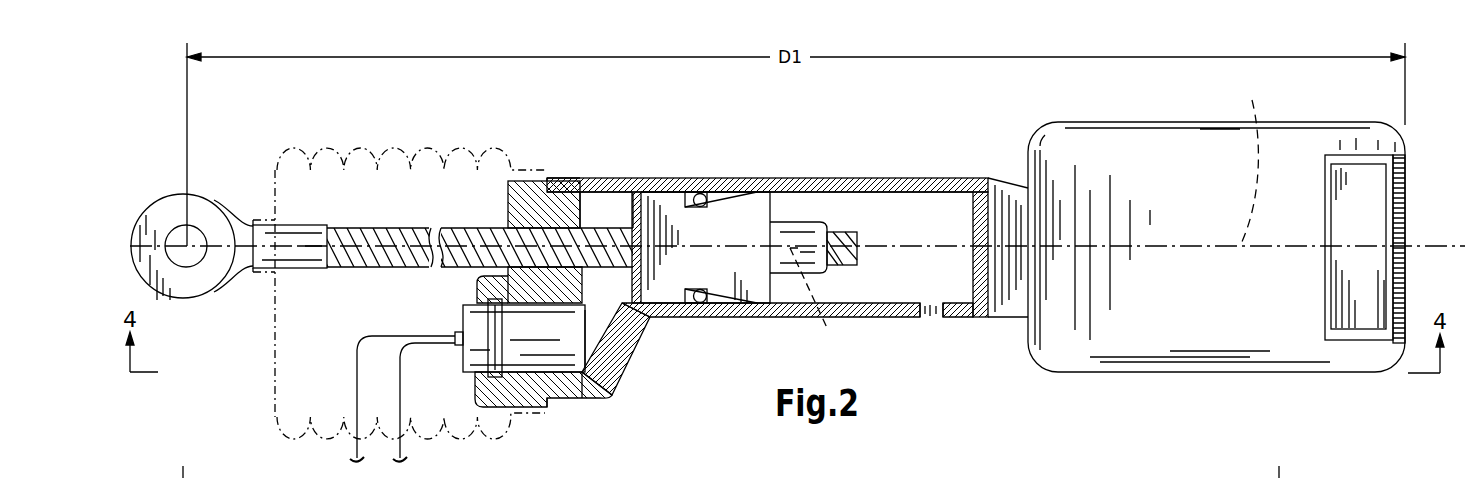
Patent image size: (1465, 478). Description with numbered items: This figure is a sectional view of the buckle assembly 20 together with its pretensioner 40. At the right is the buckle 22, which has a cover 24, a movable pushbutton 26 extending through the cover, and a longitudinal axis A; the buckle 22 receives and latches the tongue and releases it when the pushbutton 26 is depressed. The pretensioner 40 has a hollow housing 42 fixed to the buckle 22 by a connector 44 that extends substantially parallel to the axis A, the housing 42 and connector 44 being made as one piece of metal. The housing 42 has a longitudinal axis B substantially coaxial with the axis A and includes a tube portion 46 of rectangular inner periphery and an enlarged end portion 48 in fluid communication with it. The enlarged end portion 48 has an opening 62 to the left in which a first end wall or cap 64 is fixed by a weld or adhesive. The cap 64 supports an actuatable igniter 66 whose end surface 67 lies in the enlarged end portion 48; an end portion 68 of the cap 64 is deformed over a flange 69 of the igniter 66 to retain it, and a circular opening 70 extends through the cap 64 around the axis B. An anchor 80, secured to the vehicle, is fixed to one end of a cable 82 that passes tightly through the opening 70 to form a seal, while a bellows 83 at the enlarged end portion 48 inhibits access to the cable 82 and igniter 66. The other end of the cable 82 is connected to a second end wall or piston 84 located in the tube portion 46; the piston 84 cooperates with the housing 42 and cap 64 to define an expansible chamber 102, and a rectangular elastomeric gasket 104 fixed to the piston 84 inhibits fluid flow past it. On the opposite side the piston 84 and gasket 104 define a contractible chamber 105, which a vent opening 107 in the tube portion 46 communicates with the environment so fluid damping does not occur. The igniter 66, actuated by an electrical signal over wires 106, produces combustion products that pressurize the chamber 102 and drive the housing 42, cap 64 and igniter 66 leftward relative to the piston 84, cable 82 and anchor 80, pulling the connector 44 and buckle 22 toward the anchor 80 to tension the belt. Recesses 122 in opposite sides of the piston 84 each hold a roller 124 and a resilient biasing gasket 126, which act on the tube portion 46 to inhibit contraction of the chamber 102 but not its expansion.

The buckle assembly 20 is at (1000, 114).
The buckle 22 is at (1123, 118).
The cover 24 is at (1316, 140).
The pushbutton 26 is at (1372, 198).
The pretensioner 40 is at (824, 130).
The housing 42 is at (651, 328).
The connector 44 is at (1017, 194).
The tube portion 46 is at (945, 178).
The enlarged end portion 48 is at (600, 386).
The opening 62 is at (577, 197).
The cap 64 is at (525, 425).
The igniter 66 is at (483, 355).
The end surface 67 is at (586, 356).
The end portion 68 is at (480, 378).
The flange 69 is at (489, 296).
The circular opening 70 is at (535, 232).
The anchor 80 is at (183, 212).
The cable 82 is at (480, 240).
The bellows 83 is at (320, 146).
The piston 84 is at (747, 228).
The expansible chamber 102 is at (606, 210).
The gasket 104 is at (638, 193).
The contractible chamber 105 is at (918, 223).
The wires 106 is at (398, 340).
The vent opening 107 is at (933, 309).
The recesses 122 is at (728, 190).
The roller 124 is at (703, 193).
The resilient biasing gasket 126 is at (693, 193).
The longitudinal axis A is at (1249, 161).
The longitudinal axis B is at (813, 286).